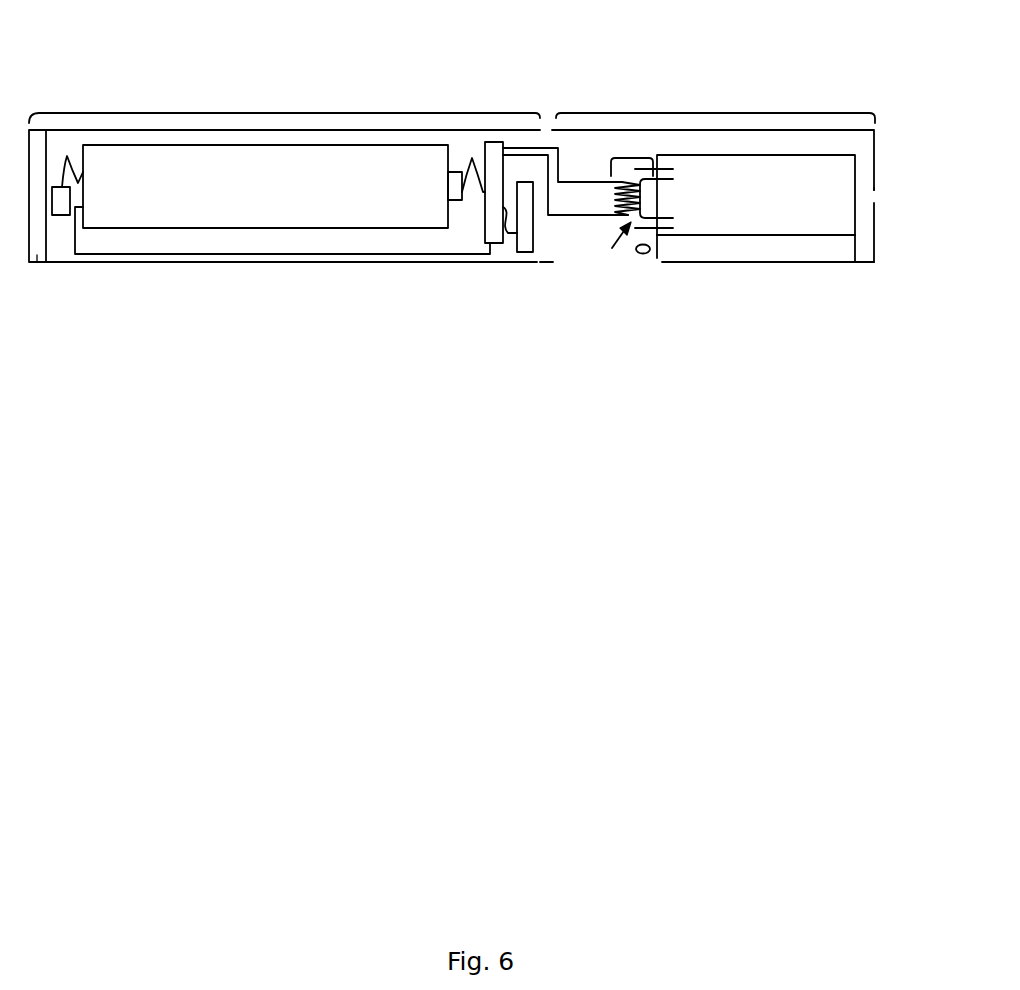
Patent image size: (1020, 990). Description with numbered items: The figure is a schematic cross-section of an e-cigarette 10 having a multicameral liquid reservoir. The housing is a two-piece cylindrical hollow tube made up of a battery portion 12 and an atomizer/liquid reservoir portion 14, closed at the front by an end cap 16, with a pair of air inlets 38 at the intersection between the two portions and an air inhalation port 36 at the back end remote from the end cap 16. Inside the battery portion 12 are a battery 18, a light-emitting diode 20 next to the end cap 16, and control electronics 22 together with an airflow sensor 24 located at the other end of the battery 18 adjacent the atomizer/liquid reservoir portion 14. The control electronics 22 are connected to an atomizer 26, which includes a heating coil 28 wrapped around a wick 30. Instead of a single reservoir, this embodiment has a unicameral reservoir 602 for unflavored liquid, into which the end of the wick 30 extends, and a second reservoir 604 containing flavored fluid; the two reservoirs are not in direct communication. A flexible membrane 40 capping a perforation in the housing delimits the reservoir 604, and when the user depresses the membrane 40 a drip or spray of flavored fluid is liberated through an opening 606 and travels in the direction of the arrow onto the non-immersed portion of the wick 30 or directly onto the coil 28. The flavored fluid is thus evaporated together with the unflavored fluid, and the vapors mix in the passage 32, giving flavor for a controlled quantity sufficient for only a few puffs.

The e-cigarette 10 is at (200, 78).
The battery portion 12 is at (285, 113).
The atomizer/liquid reservoir portion 14 is at (717, 113).
The end cap 16 is at (37, 262).
The battery 18 is at (182, 217).
The light-emitting diode 20 is at (62, 215).
The control electronics 22 is at (495, 142).
The airflow sensor 24 is at (525, 252).
The atomizer 26 is at (633, 158).
The heating coil 28 is at (611, 172).
The wick 30 is at (628, 215).
The passage 32 is at (807, 155).
The air inhalation port 36 is at (874, 197).
The air inlets 38 is at (545, 125).
The flexible membrane 40 is at (725, 262).
The unicameral reservoir 602 is at (792, 223).
The second reservoir 604 is at (833, 250).
The opening 606 is at (652, 250).